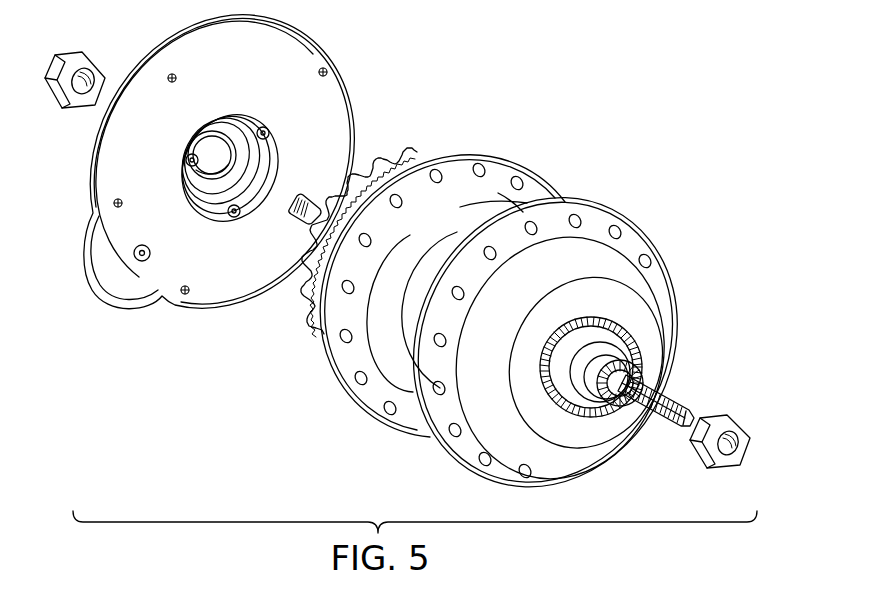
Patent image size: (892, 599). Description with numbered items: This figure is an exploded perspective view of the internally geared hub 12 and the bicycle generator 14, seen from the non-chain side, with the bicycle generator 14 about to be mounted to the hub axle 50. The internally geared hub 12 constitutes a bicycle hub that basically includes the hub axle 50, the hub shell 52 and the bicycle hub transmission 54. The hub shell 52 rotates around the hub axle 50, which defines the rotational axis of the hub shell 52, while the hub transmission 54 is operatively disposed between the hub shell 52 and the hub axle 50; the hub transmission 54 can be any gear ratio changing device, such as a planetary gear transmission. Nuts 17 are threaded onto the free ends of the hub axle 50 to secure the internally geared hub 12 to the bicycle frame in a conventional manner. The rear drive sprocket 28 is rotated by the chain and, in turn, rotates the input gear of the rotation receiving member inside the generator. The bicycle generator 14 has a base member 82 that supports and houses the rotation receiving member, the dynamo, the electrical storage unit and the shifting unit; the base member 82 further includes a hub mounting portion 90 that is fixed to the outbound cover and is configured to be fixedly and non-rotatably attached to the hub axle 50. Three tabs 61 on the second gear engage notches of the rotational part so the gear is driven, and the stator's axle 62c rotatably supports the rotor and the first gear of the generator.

The internally geared hub 12 is at (637, 215).
The bicycle generator 14 is at (126, 72).
The nuts 17 is at (57, 108).
The rear drive sprocket 28 is at (400, 158).
The hub axle 50 is at (667, 397).
The hub shell 52 is at (333, 372).
The bicycle hub transmission 54 is at (301, 292).
The tabs 61 is at (188, 156).
The axle 62c is at (150, 247).
The base member 82 is at (314, 36).
The hub mounting portion 90 is at (238, 150).